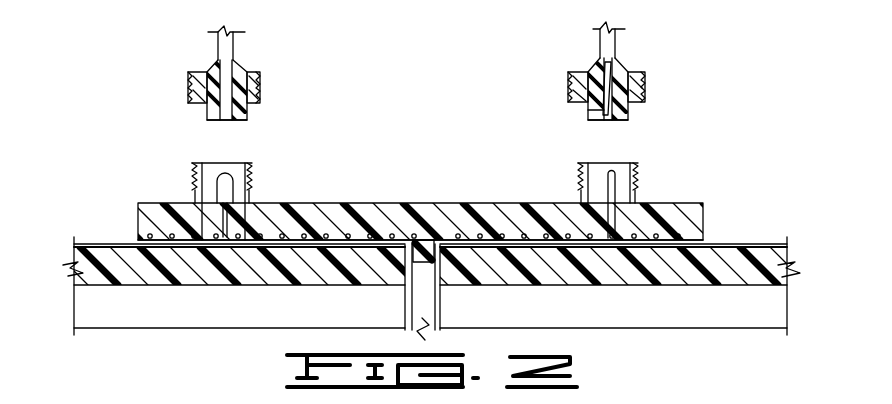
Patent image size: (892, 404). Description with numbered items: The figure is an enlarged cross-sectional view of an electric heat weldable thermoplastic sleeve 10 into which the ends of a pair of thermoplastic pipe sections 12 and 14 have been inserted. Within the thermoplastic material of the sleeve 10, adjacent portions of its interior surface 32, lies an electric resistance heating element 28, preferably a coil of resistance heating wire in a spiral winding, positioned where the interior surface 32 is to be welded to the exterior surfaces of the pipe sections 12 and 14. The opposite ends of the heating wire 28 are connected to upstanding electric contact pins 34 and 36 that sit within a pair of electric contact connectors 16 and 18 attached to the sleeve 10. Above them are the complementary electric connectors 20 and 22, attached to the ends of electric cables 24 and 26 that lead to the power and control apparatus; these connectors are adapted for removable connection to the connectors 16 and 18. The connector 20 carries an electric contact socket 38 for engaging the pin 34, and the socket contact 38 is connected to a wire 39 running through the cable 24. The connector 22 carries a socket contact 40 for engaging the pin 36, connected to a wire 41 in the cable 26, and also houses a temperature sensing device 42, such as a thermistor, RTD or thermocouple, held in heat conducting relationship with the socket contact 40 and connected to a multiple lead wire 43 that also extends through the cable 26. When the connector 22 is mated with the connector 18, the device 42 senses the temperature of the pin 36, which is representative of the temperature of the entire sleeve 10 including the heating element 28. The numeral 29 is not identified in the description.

The electric heat weldable thermoplastic sleeve 10 is at (706, 202).
The thermoplastic pipe section 12 is at (747, 257).
The thermoplastic pipe section 14 is at (102, 255).
The electric contact connector 16 is at (259, 166).
The electric contact connector 18 is at (641, 166).
The complementary electric connection 20 is at (263, 90).
The complementary electric connection 22 is at (650, 83).
The electric cable 24 is at (230, 47).
The electric cable 26 is at (613, 40).
The electric resistance heating element 28 is at (350, 230).
The joint filler 29 is at (418, 232).
The interior surface 32 is at (160, 247).
The electric contact pin 34 is at (228, 177).
The electric contact pin 36 is at (612, 177).
The electric contact socket 38 is at (223, 122).
The wire 39 is at (227, 70).
The electric contact socket 40 is at (607, 120).
The wire 41 is at (615, 68).
The temperature sensing device 42 is at (600, 110).
The multiple lead wire 43 is at (600, 72).